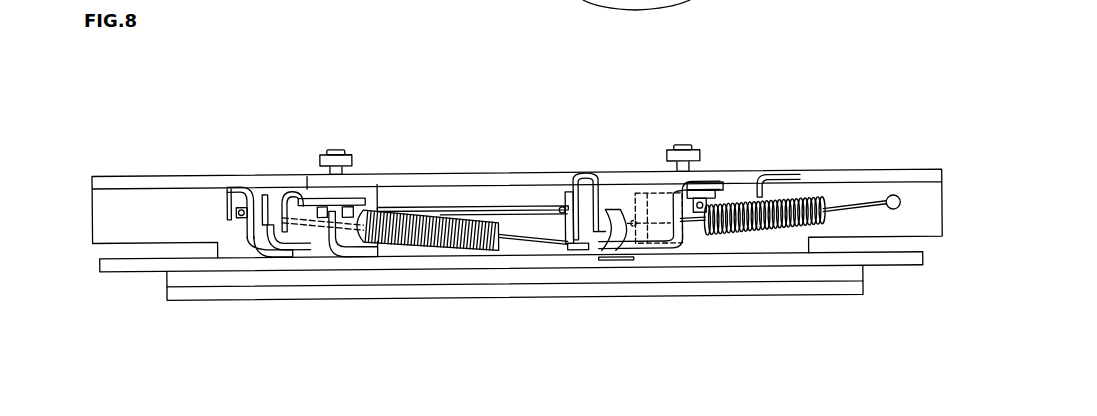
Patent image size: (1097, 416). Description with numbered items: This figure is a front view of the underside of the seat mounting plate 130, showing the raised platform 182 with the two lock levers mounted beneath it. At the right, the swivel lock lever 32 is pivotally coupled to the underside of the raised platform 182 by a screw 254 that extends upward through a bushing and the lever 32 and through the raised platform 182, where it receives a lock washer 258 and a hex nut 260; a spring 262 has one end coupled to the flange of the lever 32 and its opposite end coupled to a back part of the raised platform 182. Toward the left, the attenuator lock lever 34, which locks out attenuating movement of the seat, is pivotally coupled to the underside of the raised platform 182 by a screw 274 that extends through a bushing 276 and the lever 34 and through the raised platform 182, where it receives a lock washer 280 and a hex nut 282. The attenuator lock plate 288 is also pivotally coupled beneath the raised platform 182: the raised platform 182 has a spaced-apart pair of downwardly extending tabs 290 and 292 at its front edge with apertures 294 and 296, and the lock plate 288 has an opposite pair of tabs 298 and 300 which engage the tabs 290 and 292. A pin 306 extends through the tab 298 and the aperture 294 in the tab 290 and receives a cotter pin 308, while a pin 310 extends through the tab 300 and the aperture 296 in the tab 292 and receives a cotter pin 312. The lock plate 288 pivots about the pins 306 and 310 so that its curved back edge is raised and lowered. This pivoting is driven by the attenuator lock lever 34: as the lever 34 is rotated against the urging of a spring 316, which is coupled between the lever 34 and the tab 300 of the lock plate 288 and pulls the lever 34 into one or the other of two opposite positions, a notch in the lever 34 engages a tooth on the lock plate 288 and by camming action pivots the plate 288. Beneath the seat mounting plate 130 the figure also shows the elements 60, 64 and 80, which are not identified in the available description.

The raised platform 182 is at (128, 176).
The seat mounting plate 130 is at (86, 214).
The plate 80 is at (913, 265).
The plate 64 is at (865, 275).
The base plate 60 is at (840, 296).
The cotter pin 308 is at (228, 211).
The aperture 294 is at (237, 219).
The tab 298 is at (257, 196).
The tab 290 is at (250, 238).
The pin 306 is at (266, 200).
The attenuator lock plate 288 is at (294, 252).
The screw 274 is at (340, 207).
The bushing 276 is at (355, 209).
The lock washer 280 is at (318, 160).
The hex nut 282 is at (326, 152).
The attenuator lock lever 34 is at (357, 255).
The spring 316 is at (428, 240).
The cotter pin 312 is at (563, 206).
The tab 300 is at (582, 177).
The tab 292 is at (610, 240).
The aperture 296 is at (601, 208).
The pin 310 is at (630, 186).
The swivel lock lever 32 is at (664, 255).
The lock washer 258 is at (700, 187).
The screw 254 is at (703, 205).
The hex nut 260 is at (682, 148).
The spring 262 is at (752, 232).